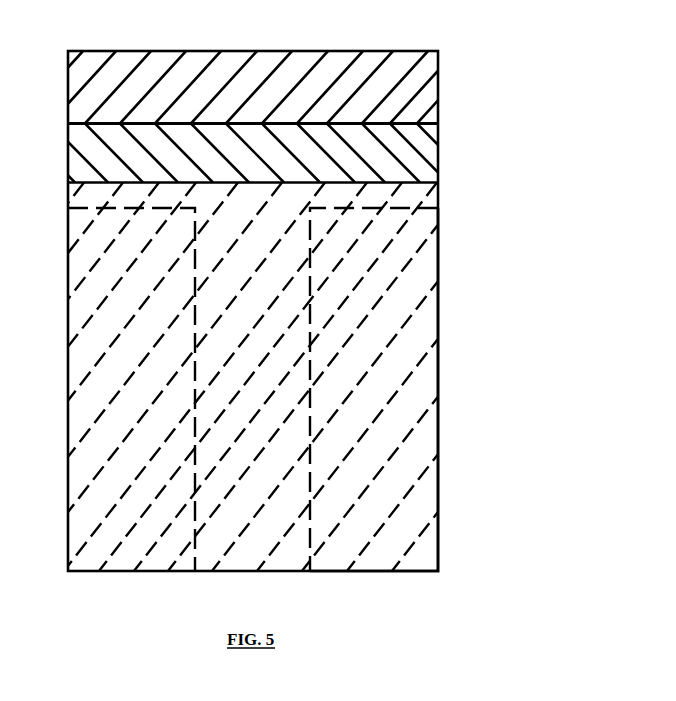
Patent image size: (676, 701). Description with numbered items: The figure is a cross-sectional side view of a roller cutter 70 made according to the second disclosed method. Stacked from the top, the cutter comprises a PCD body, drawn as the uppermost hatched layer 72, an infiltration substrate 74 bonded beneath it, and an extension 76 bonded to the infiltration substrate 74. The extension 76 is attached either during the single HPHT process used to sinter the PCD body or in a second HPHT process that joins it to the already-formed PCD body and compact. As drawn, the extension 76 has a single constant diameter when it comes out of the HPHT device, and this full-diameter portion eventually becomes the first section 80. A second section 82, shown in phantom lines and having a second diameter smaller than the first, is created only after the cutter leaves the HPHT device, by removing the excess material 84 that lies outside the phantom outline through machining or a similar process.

The roller cutter 70 is at (499, 46).
The first layer 72 is at (338, 62).
The infiltration substrate 74 is at (436, 128).
The extension 76 is at (440, 307).
The first section 80 is at (439, 195).
The second section 82 is at (312, 432).
The excess material 84 is at (430, 443).